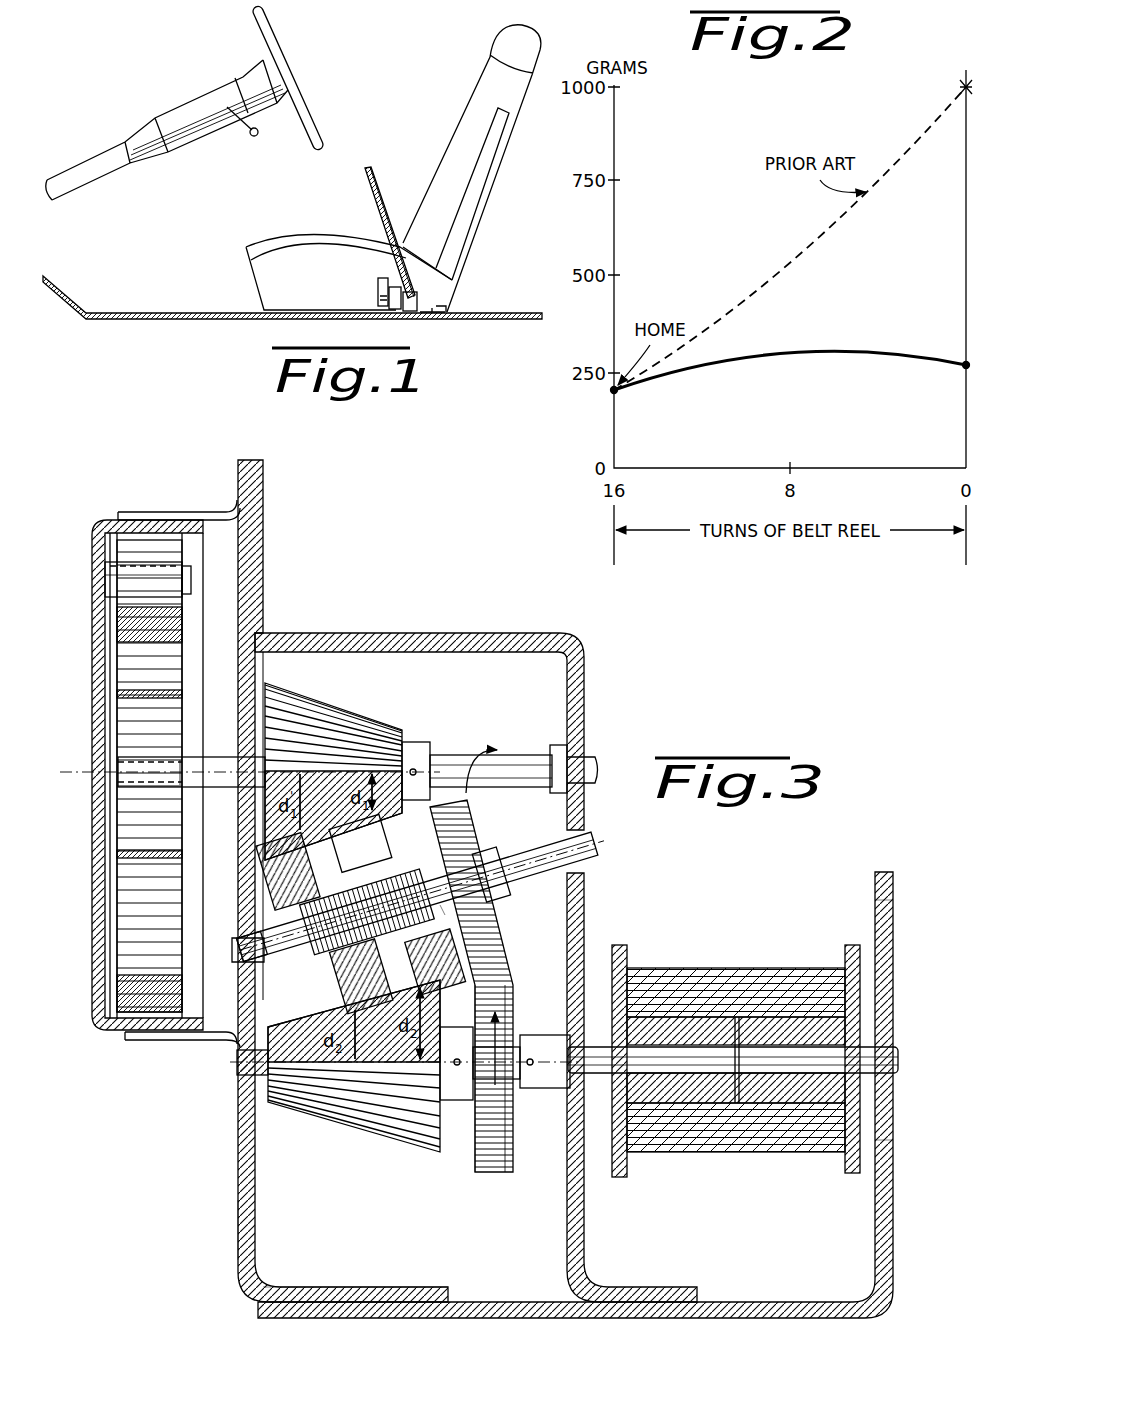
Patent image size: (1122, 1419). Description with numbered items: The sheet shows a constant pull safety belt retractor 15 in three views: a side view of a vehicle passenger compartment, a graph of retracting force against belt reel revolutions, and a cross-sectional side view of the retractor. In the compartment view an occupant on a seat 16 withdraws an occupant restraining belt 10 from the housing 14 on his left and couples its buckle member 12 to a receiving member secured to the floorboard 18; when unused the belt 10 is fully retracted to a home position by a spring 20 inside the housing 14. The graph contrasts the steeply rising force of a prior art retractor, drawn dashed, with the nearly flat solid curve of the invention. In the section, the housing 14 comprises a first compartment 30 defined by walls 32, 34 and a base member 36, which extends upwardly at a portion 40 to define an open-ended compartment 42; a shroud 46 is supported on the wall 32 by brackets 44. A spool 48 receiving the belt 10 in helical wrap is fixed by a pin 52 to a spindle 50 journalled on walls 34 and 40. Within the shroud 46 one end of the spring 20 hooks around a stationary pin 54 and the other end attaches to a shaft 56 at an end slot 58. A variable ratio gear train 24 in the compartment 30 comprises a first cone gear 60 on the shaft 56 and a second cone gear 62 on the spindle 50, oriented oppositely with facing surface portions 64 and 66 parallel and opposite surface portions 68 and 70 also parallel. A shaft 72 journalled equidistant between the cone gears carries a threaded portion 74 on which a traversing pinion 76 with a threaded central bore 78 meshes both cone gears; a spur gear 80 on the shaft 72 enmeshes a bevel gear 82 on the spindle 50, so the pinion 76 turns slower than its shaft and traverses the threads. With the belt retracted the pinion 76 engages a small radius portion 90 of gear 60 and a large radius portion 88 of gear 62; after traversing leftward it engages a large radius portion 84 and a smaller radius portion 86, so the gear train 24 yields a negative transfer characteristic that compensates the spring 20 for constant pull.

In FIG. 1, the occupant restraining belt 10 is at (381, 213).
In FIG. 3, the occupant restraining belt 10 is at (710, 968).
In FIG. 1, the buckle member 12 is at (369, 168).
In FIG. 1, the housing 14 is at (432, 318).
In FIG. 3, the housing 14 is at (456, 596).
In FIG. 1, the constant pull safety belt retractor 15 is at (372, 284).
In FIG. 1, the seat 16 is at (262, 287).
In FIG. 1, the floorboard 18 is at (481, 313).
In FIG. 3, the spring 20 is at (135, 828).
In FIG. 3, the variable ratio gear train 24 is at (355, 1218).
In FIG. 3, the first compartment 30 is at (230, 1222).
In FIG. 3, the wall 32 is at (237, 1245).
In FIG. 3, the wall 34 is at (588, 1213).
In FIG. 3, the base member 36 is at (545, 1304).
In FIG. 3, the upwardly extending portion 40 is at (895, 1150).
In FIG. 3, the open-ended compartment 42 is at (900, 900).
In FIG. 3, the brackets 44 is at (212, 518).
In FIG. 3, the shroud 46 is at (97, 652).
In FIG. 3, the spool 48 is at (625, 950).
In FIG. 3, the spindle 50 is at (892, 1060).
In FIG. 3, the pin 52 is at (740, 1037).
In FIG. 3, the stationary pin 54 is at (112, 568).
In FIG. 3, the shaft 56 is at (205, 785).
In FIG. 3, the end slot 58 is at (122, 768).
In FIG. 3, the first cone gear 60 is at (347, 717).
In FIG. 3, the second cone gear 62 is at (381, 1089).
In FIG. 3, the facing surface portion 64 is at (262, 940).
In FIG. 3, the facing surface portion 66 is at (505, 932).
In FIG. 3, the opposite surface portion 68 is at (302, 690).
In FIG. 3, the opposite surface portion 70 is at (275, 1105).
In FIG. 3, the shaft 72 is at (600, 857).
In FIG. 3, the threaded portion 74 is at (470, 800).
In FIG. 3, the traversing pinion 76 is at (264, 1062).
In FIG. 3, the threaded central bore 78 is at (355, 940).
In FIG. 3, the spur gear 80 is at (448, 912).
In FIG. 3, the bevel gear 82 is at (583, 935).
In FIG. 3, the large radius portion 84 is at (282, 848).
In FIG. 3, the smaller radius portion 86 is at (312, 966).
In FIG. 3, the large radius portion 88 is at (410, 968).
In FIG. 3, the small radius portion 90 is at (450, 760).